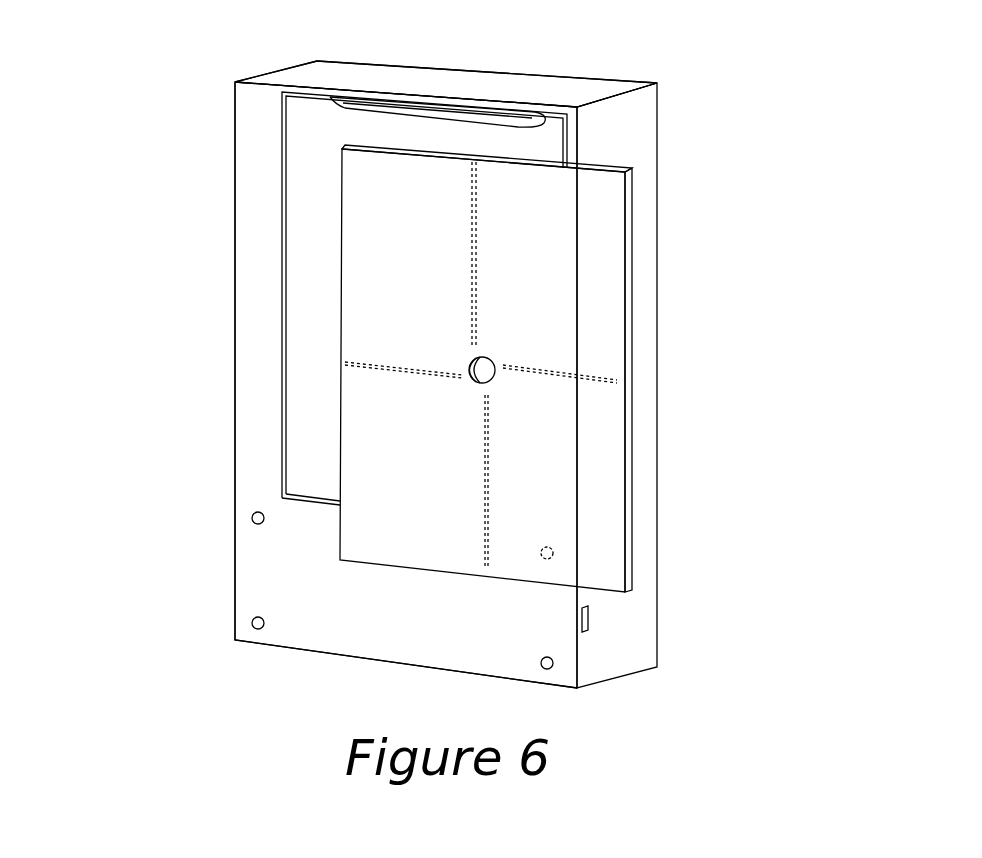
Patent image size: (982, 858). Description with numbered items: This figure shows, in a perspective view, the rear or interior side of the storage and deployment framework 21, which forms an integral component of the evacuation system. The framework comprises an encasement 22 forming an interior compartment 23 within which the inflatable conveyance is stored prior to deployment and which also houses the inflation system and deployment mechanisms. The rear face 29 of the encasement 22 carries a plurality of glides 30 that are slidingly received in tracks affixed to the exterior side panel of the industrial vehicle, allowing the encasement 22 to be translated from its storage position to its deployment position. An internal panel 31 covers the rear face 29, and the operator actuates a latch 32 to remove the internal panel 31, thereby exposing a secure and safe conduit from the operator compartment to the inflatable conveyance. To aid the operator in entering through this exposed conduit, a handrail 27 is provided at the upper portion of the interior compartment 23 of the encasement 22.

The storage and deployment framework 21 is at (441, 375).
The encasement 22 is at (532, 78).
The interior compartment 23 is at (527, 144).
The handrail 27 is at (337, 112).
The rear face 29 is at (248, 313).
The glides 30 is at (255, 523).
The internal panel 31 is at (582, 288).
The latch 32 is at (470, 283).